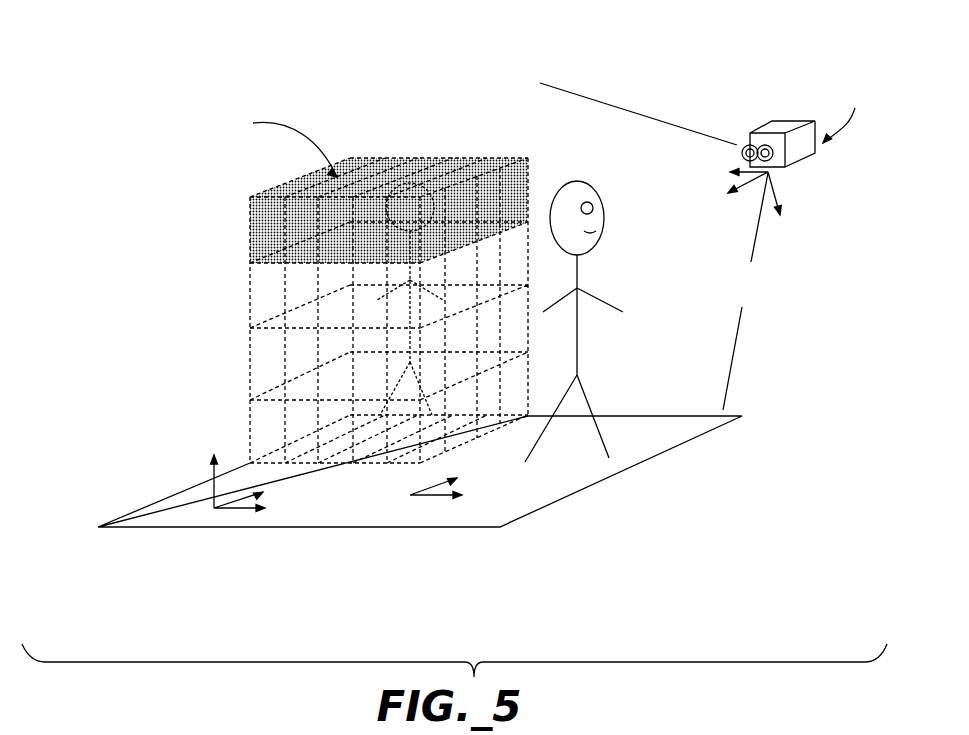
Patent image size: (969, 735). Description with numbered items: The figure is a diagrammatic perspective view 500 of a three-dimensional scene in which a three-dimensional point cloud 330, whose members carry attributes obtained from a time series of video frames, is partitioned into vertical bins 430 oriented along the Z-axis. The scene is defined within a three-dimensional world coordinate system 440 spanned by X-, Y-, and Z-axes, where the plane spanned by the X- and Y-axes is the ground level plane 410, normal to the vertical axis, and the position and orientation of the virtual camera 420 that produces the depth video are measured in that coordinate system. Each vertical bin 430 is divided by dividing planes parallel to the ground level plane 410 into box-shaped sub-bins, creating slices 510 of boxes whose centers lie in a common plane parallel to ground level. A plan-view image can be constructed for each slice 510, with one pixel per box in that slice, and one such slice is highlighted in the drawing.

The diagrammatic perspective view 500 is at (127, 43).
The three-dimensional point cloud 330 is at (345, 157).
The vertical bins 430 is at (452, 158).
The slices 510 is at (243, 405).
The ground level plane 410 is at (562, 484).
The virtual camera 420 is at (802, 163).
The 3D world coordinate system 440 is at (214, 532).